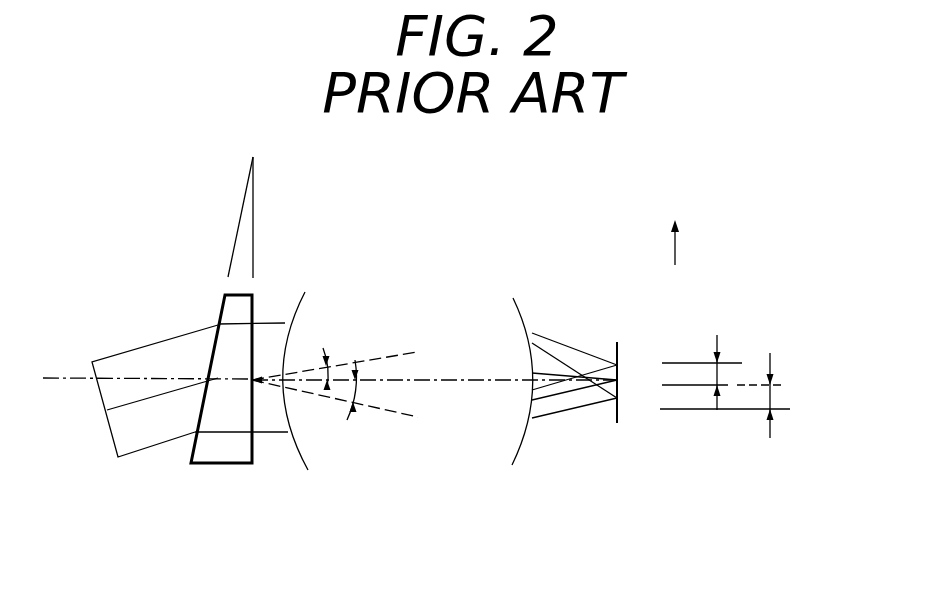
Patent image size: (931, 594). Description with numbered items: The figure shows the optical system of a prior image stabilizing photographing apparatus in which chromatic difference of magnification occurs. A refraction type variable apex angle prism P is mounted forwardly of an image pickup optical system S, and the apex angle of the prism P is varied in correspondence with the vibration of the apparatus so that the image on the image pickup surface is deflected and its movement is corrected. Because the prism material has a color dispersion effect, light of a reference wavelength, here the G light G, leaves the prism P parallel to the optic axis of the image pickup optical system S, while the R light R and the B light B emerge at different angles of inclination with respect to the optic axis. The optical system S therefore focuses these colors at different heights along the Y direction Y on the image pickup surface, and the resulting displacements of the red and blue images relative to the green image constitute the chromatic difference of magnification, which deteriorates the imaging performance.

The variable apex angle prism P is at (220, 464).
The image pickup optical system S is at (413, 450).
The G light G is at (532, 382).
The R light R is at (346, 354).
The B light B is at (347, 407).
The Y direction Y is at (674, 225).